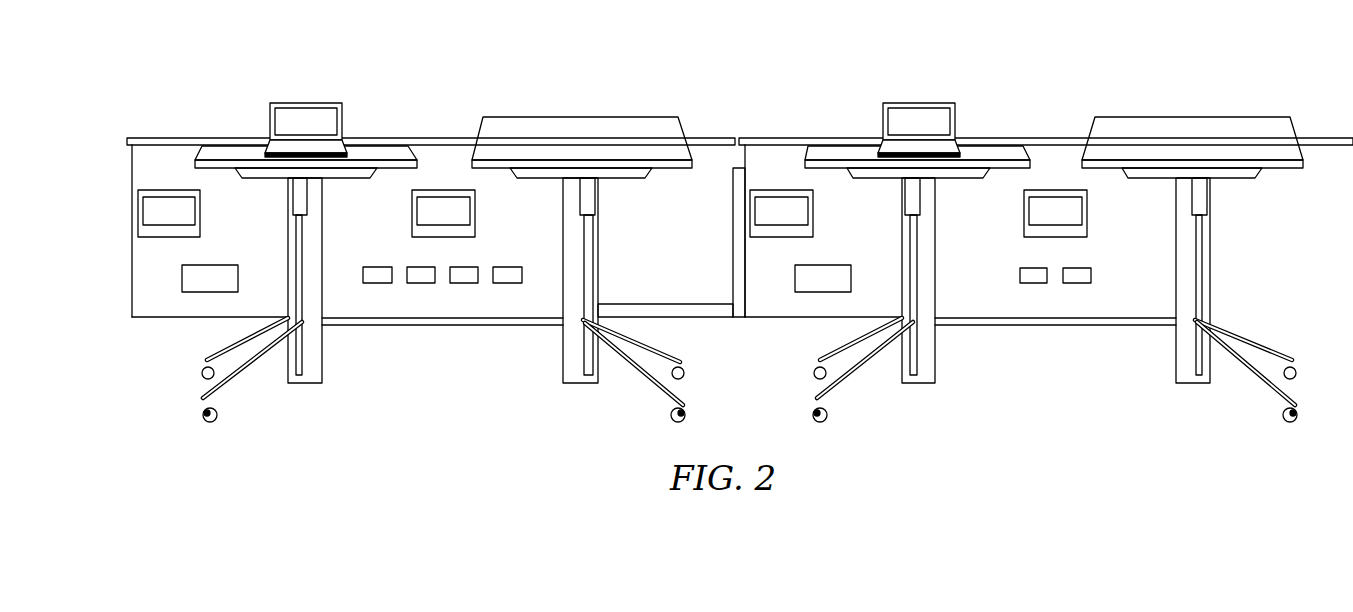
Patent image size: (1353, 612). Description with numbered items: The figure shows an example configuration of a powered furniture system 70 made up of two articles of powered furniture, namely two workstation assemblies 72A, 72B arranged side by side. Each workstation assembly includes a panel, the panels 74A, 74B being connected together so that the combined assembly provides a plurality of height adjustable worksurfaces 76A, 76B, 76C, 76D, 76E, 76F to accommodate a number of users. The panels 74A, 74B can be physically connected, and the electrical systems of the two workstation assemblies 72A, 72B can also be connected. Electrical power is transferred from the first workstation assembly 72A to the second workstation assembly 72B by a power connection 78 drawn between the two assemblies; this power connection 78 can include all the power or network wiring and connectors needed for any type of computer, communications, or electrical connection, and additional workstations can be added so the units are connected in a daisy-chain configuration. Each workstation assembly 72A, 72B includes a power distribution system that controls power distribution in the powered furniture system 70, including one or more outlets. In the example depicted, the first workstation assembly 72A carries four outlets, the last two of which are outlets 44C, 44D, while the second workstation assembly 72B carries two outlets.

The powered furniture system 70 is at (740, 213).
The workstation assembly 72A is at (431, 246).
The workstation assembly 72B is at (1043, 245).
The panel 74A is at (490, 307).
The panel 74B is at (1062, 307).
The height adjustable worksurface 76A is at (390, 150).
The height adjustable worksurface 76B is at (587, 127).
The height adjustable worksurface 76C is at (665, 152).
The height adjustable worksurface 76D is at (1003, 150).
The height adjustable worksurface 76E is at (1198, 127).
The height adjustable worksurface 76F is at (1277, 152).
The power connection 78 is at (683, 328).
The outlet 44C is at (465, 266).
The outlet 44D is at (510, 285).